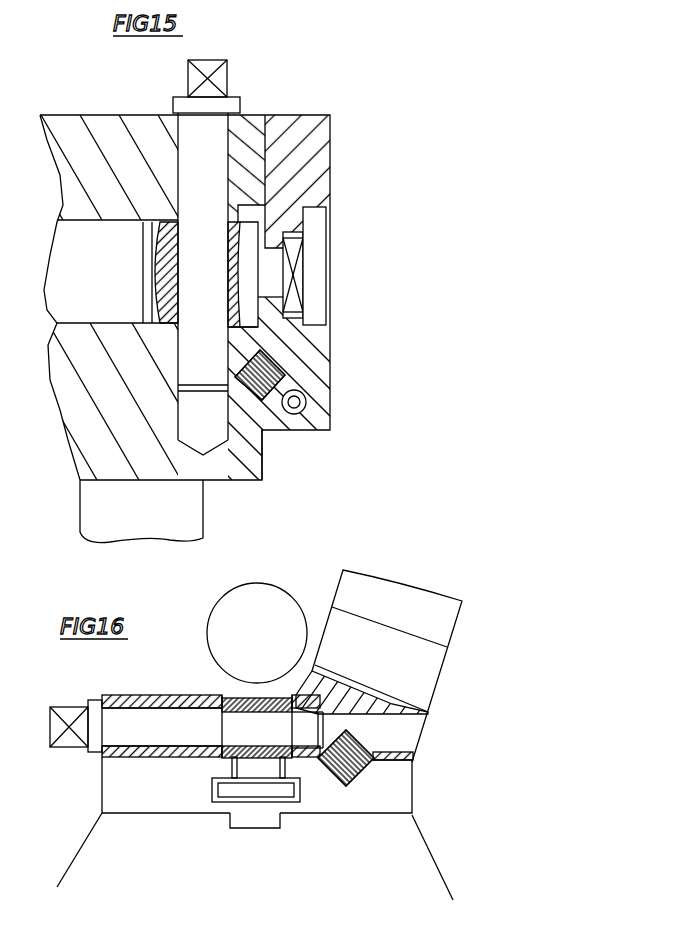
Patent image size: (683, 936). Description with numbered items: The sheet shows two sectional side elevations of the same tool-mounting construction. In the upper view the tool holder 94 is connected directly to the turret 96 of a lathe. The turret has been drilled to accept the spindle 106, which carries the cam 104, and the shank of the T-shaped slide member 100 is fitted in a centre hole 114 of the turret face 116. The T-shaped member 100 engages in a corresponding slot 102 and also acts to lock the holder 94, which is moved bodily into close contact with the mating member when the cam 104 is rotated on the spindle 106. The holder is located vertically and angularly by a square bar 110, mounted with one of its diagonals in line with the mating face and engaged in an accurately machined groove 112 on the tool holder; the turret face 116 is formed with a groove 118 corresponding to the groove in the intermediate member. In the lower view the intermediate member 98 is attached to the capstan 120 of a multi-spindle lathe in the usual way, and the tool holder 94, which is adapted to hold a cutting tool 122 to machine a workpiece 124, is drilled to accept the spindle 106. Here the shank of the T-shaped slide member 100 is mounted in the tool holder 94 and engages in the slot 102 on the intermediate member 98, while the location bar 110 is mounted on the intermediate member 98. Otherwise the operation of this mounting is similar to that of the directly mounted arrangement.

In FIG. 15, the tool holder 94 is at (298, 140).
In FIG. 16, the tool holder 94 is at (172, 702).
In FIG. 15, the turret 96 is at (237, 450).
In FIG. 16, the intermediate member 98 is at (127, 795).
In FIG. 15, the T-shaped slide member 100 is at (273, 272).
In FIG. 16, the T-shaped slide member 100 is at (266, 728).
In FIG. 15, the slot 102 is at (303, 325).
In FIG. 16, the slot 102 is at (208, 780).
In FIG. 15, the cam 104 is at (197, 286).
In FIG. 15, the spindle 106 is at (213, 138).
In FIG. 16, the spindle 106 is at (127, 718).
In FIG. 15, the square bar 110 is at (263, 380).
In FIG. 16, the square bar 110 is at (357, 782).
In FIG. 15, the groove 112 is at (280, 372).
In FIG. 15, the centre hole 114 is at (117, 271).
In FIG. 15, the turret face 116 is at (262, 465).
In FIG. 15, the groove 118 is at (303, 417).
In FIG. 16, the capstan 120 is at (255, 856).
In FIG. 16, the cutting tool 122 is at (387, 666).
In FIG. 16, the workpiece 124 is at (257, 633).